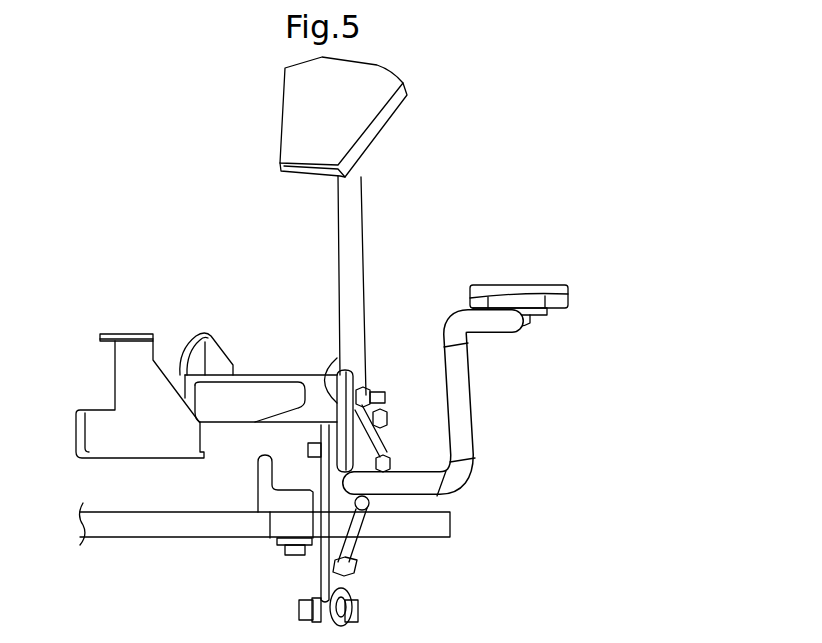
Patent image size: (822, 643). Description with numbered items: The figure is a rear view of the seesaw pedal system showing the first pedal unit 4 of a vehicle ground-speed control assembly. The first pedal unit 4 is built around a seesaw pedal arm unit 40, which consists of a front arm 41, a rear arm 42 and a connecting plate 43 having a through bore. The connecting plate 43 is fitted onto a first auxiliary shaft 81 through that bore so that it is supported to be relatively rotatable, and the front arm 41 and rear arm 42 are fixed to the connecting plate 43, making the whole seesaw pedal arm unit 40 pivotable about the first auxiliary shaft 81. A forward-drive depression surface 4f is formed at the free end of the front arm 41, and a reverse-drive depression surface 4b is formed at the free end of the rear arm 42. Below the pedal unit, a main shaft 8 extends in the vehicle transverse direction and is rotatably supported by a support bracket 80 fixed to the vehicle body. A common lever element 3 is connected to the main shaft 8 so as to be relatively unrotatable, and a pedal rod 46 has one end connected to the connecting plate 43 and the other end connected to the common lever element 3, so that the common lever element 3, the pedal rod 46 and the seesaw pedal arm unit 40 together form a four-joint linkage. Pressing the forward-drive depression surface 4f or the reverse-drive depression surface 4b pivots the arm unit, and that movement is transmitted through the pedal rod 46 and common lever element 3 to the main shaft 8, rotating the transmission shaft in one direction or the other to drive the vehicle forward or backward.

The first pedal unit 4 is at (497, 148).
The seesaw pedal arm unit 40 is at (366, 217).
The forward-drive depression surface 4f is at (300, 112).
The front arm 41 is at (350, 246).
The reverse-drive depression surface 4b is at (519, 285).
The rear arm 42 is at (464, 403).
The connecting plate 43 is at (323, 383).
The first auxiliary shaft 81 is at (278, 373).
The main shaft 8 is at (131, 525).
The support bracket 80 is at (287, 519).
The common lever element 3 is at (318, 565).
The pedal rod 46 is at (360, 548).